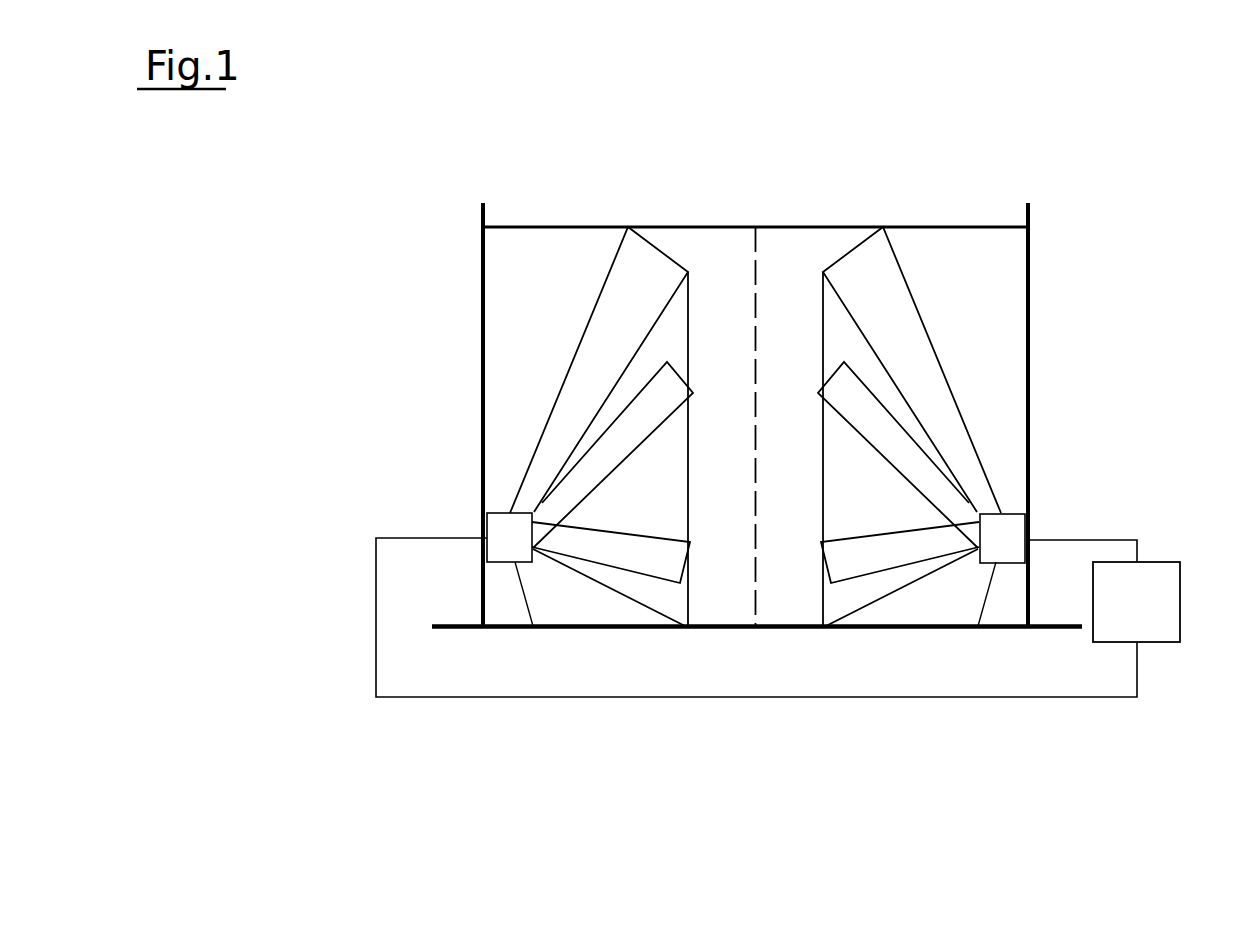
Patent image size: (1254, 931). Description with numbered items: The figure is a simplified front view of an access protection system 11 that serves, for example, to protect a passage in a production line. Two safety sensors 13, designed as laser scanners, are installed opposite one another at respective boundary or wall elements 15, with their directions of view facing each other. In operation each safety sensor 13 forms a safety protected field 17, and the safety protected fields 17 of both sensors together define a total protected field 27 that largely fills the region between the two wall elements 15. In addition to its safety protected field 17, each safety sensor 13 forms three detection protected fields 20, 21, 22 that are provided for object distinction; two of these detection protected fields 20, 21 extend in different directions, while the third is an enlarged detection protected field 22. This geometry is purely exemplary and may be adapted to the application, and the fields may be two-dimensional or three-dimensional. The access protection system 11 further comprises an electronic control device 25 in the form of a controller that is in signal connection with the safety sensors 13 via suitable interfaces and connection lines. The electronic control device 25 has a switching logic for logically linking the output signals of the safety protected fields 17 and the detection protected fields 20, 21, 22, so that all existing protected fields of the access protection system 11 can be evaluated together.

The access protection system 11 is at (1132, 212).
The safety sensor 13 is at (497, 532).
The wall element 15 is at (482, 323).
The safety protected field 17 is at (627, 262).
The detection protected field 20 is at (670, 560).
The detection protected field 21 is at (637, 420).
The enlarged detection protected field 22 is at (645, 360).
The electronic control device 25 is at (1121, 620).
The total protected field 27 is at (668, 212).